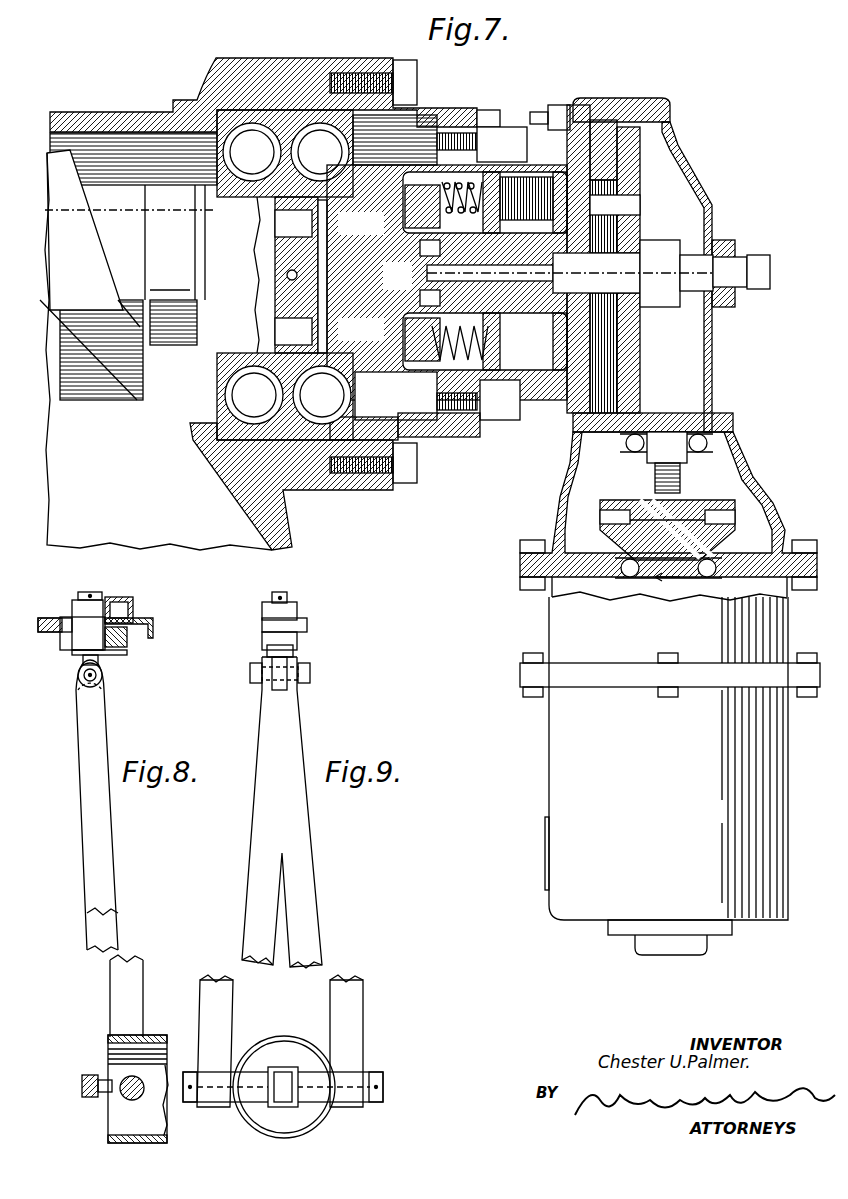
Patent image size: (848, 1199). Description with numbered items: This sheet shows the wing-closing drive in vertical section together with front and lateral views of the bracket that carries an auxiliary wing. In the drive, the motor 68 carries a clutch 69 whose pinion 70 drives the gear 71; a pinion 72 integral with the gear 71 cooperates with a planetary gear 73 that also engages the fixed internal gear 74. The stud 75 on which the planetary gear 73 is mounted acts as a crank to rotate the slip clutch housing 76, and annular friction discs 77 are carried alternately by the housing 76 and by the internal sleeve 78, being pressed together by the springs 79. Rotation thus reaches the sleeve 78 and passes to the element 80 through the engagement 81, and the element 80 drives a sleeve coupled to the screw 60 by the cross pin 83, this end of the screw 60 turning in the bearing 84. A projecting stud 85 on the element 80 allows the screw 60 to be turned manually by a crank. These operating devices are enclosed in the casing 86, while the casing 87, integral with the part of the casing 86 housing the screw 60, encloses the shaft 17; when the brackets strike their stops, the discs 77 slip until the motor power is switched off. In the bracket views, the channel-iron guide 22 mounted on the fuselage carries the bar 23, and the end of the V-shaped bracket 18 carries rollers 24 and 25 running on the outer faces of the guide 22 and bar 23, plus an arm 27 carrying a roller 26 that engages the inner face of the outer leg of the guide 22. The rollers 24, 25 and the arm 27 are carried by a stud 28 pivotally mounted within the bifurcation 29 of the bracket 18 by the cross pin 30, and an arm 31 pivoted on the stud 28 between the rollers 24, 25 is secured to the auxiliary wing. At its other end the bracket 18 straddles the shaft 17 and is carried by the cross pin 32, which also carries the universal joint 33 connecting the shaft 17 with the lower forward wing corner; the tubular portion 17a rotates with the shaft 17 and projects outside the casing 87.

In FIG. 7, the screw 60 is at (60, 155).
In FIG. 7, the casing 86 is at (135, 118).
In FIG. 7, the bearing 84 is at (298, 155).
In FIG. 7, the cross pin 83 is at (318, 252).
In FIG. 7, the internal sleeve 78 is at (437, 227).
In FIG. 7, the springs 79 is at (443, 343).
In FIG. 7, the element 80 is at (435, 296).
In FIG. 7, the casing 87 is at (222, 458).
In FIG. 7, the slip clutch housing 76 is at (520, 153).
In FIG. 7, the annular friction discs 77 is at (525, 180).
In FIG. 7, the engagement 81 is at (578, 385).
In FIG. 7, the fixed internal gear 74 is at (610, 362).
In FIG. 7, the stud 75 is at (612, 183).
In FIG. 7, the gear 71 is at (614, 218).
In FIG. 7, the planetary gear 73 is at (668, 242).
In FIG. 7, the pinion 72 is at (602, 306).
In FIG. 7, the projecting stud 85 is at (752, 262).
In FIG. 7, the pinion 70 is at (694, 402).
In FIG. 7, the clutch 69 is at (575, 505).
In FIG. 7, the motor 68 is at (557, 770).
In FIG. 8, the bracket 18 is at (112, 865).
In FIG. 9, the bracket 18 is at (305, 843).
In FIG. 8, the stud 28 is at (90, 592).
In FIG. 9, the stud 28 is at (280, 592).
In FIG. 8, the roller 25 is at (75, 610).
In FIG. 9, the roller 25 is at (297, 608).
In FIG. 8, the bar 23 is at (133, 608).
In FIG. 8, the guide 22 is at (155, 632).
In FIG. 8, the arm 31 is at (75, 625).
In FIG. 9, the arm 31 is at (307, 625).
In FIG. 8, the roller 26 is at (127, 637).
In FIG. 8, the roller 24 is at (75, 640).
In FIG. 9, the roller 24 is at (297, 642).
In FIG. 8, the arm 27 is at (105, 658).
In FIG. 9, the arm 27 is at (267, 652).
In FIG. 8, the cross pin 30 is at (84, 677).
In FIG. 9, the cross pin 30 is at (286, 688).
In FIG. 8, the bifurcation 29 is at (82, 688).
In FIG. 9, the bifurcation 29 is at (265, 688).
In FIG. 8, the shaft 17 is at (159, 1025).
In FIG. 9, the shaft 17 is at (283, 1025).
In FIG. 8, the tubular portion 17a is at (150, 1140).
In FIG. 9, the tubular portion 17a is at (318, 1118).
In FIG. 8, the cross pin 32 is at (125, 1097).
In FIG. 9, the cross pin 32 is at (253, 1077).
In FIG. 8, the universal joint 33 is at (82, 1083).